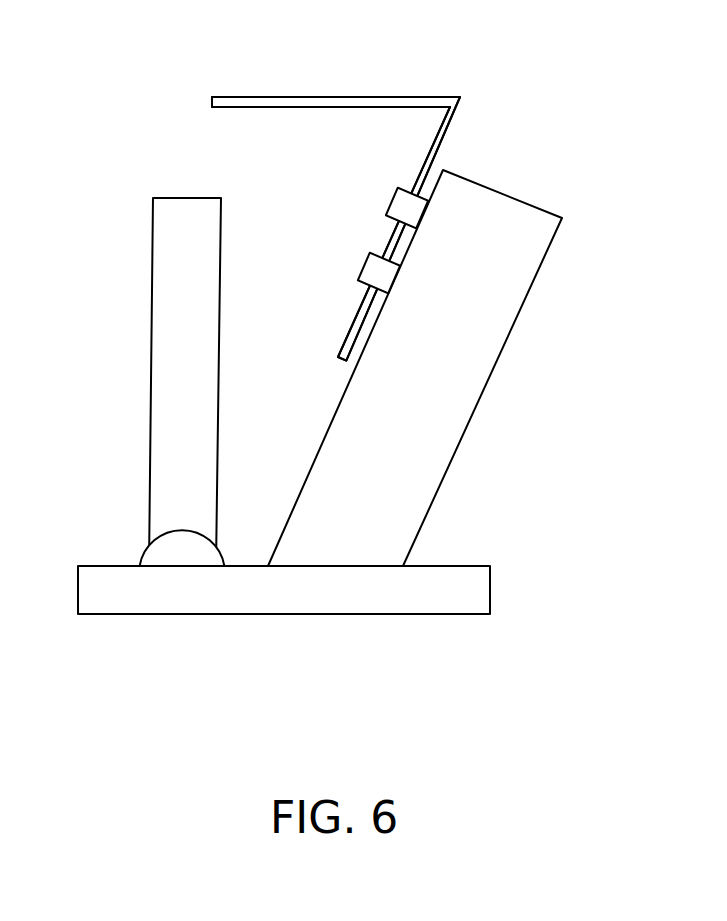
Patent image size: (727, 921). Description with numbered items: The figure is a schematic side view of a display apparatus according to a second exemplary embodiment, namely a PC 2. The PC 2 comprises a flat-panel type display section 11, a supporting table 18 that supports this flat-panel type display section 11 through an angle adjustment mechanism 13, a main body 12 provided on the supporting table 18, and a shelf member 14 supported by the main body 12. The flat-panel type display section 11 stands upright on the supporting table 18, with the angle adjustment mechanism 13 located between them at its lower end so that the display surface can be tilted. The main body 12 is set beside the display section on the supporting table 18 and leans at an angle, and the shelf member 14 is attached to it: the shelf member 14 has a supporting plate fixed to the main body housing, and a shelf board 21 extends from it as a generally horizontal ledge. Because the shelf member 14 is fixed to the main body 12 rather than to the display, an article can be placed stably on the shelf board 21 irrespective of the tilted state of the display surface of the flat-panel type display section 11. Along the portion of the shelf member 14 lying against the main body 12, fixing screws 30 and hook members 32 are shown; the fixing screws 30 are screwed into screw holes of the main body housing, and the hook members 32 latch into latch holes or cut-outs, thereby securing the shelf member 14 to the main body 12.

The PC 2 is at (526, 718).
The flat-panel type display section 11 is at (170, 303).
The main body 12 is at (468, 398).
The angle adjustment mechanism 13 is at (139, 539).
The shelf member 14 is at (442, 93).
The supporting table 18 is at (486, 588).
The shelf board 21 is at (305, 96).
The fixing screws 30 is at (398, 192).
The hook members 32 is at (367, 266).